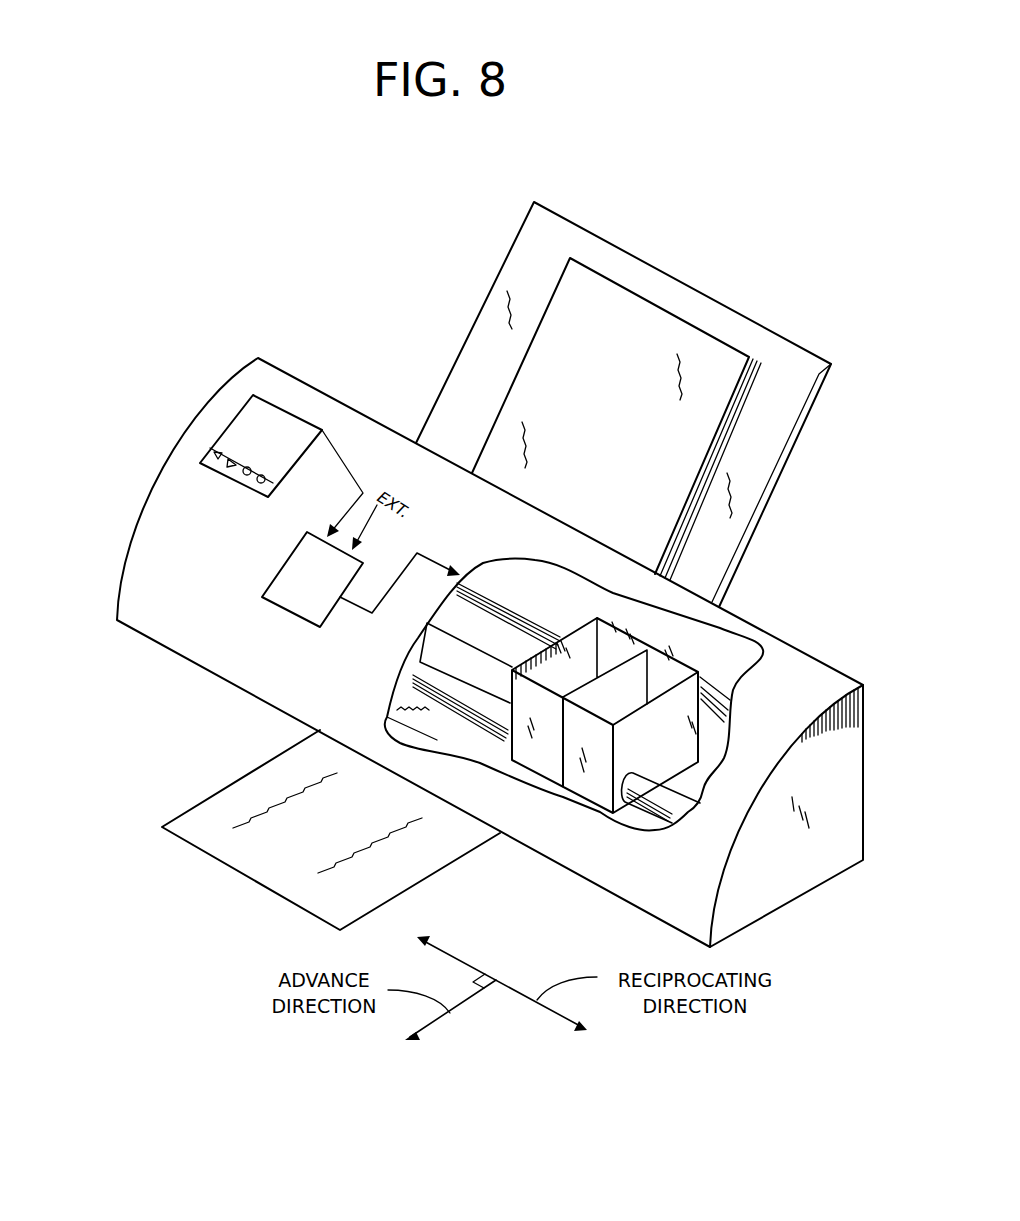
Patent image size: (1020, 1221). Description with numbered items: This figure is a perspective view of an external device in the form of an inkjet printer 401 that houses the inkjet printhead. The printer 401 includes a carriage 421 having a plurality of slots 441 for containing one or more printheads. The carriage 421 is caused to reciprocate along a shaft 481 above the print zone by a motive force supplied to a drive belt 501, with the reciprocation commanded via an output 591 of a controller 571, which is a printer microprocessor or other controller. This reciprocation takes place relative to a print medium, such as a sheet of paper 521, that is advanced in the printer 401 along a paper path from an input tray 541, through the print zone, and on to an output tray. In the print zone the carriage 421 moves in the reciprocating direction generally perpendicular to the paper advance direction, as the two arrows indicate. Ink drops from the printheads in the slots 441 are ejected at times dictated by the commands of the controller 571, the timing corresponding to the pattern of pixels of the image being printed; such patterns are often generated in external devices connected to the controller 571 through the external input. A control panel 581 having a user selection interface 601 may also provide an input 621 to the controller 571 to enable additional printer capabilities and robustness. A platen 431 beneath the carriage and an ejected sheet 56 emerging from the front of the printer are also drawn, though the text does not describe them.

The inkjet printer 401 is at (172, 380).
The control panel 581 is at (285, 412).
The user selection interface 601 is at (222, 477).
The input 621 is at (342, 512).
The controller 571 is at (282, 607).
The output 591 is at (353, 607).
The input tray 541 is at (754, 444).
The sheet of paper 521 is at (624, 423).
The drive belt 501 is at (730, 707).
The platen 431 is at (443, 720).
The carriage 421 is at (561, 788).
The slots 441 is at (614, 627).
The shaft 481 is at (658, 808).
The recording medium 56 is at (235, 810).